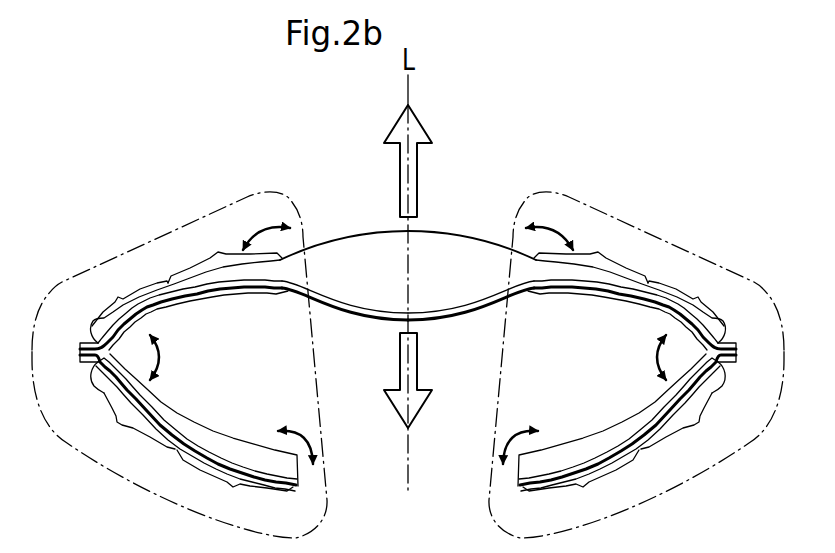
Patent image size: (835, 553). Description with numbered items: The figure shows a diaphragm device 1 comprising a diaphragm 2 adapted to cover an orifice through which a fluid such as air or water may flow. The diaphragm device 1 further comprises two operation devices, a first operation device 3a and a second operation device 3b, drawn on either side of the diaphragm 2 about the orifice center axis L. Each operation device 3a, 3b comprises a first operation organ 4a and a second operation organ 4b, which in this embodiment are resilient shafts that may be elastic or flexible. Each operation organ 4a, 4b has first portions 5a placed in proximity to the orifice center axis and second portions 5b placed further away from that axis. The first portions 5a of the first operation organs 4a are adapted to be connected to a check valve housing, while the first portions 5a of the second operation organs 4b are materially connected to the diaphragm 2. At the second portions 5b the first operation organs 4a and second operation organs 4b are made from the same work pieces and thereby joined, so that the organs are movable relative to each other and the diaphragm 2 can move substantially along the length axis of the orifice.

The diaphragm device 1 is at (303, 190).
The diaphragm 2 is at (447, 279).
The first operation device 3a is at (680, 237).
The second operation device 3b is at (128, 247).
The first operation organ 4a is at (178, 414).
The second operation organ 4b is at (184, 298).
The first portion 5a is at (408, 372).
The second portion 5b is at (407, 357).